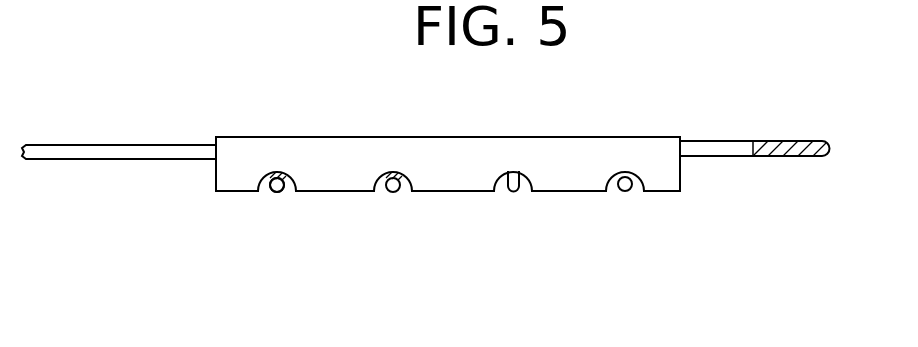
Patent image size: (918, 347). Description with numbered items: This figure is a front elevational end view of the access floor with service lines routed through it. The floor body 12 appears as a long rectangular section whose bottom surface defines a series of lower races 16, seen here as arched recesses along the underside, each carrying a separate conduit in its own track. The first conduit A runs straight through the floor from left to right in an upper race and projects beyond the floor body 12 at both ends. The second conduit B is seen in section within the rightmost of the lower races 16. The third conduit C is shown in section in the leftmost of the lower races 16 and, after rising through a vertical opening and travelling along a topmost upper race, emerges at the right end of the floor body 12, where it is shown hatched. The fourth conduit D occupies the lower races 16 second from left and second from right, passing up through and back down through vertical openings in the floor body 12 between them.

The floor body 12 is at (325, 152).
The lower races 16 is at (381, 200).
The first conduit A is at (110, 147).
The second conduit B is at (632, 194).
The third conduit C is at (806, 141).
The fourth conduit D is at (400, 192).